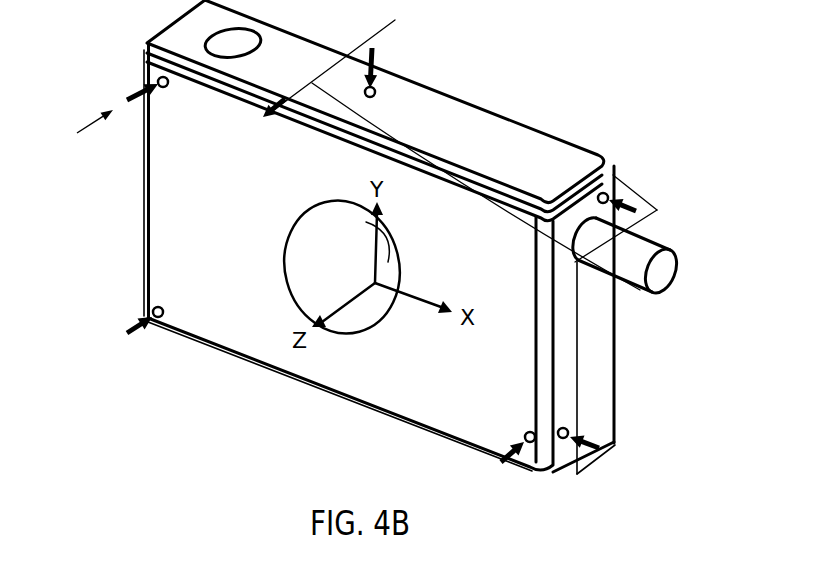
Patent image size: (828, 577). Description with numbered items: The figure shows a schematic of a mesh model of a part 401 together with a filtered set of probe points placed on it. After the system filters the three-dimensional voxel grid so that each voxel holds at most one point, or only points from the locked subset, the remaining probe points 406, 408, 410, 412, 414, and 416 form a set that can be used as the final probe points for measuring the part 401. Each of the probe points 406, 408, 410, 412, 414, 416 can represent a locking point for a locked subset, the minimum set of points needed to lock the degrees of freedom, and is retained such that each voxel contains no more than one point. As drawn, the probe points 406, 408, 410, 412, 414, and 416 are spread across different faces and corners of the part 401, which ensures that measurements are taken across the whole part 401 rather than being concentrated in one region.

The part 401 is at (473, 125).
The probe point 406 is at (376, 45).
The probe point 408 is at (146, 66).
The probe point 410 is at (613, 185).
The probe point 412 is at (592, 440).
The probe point 414 is at (140, 318).
The probe point 416 is at (504, 450).